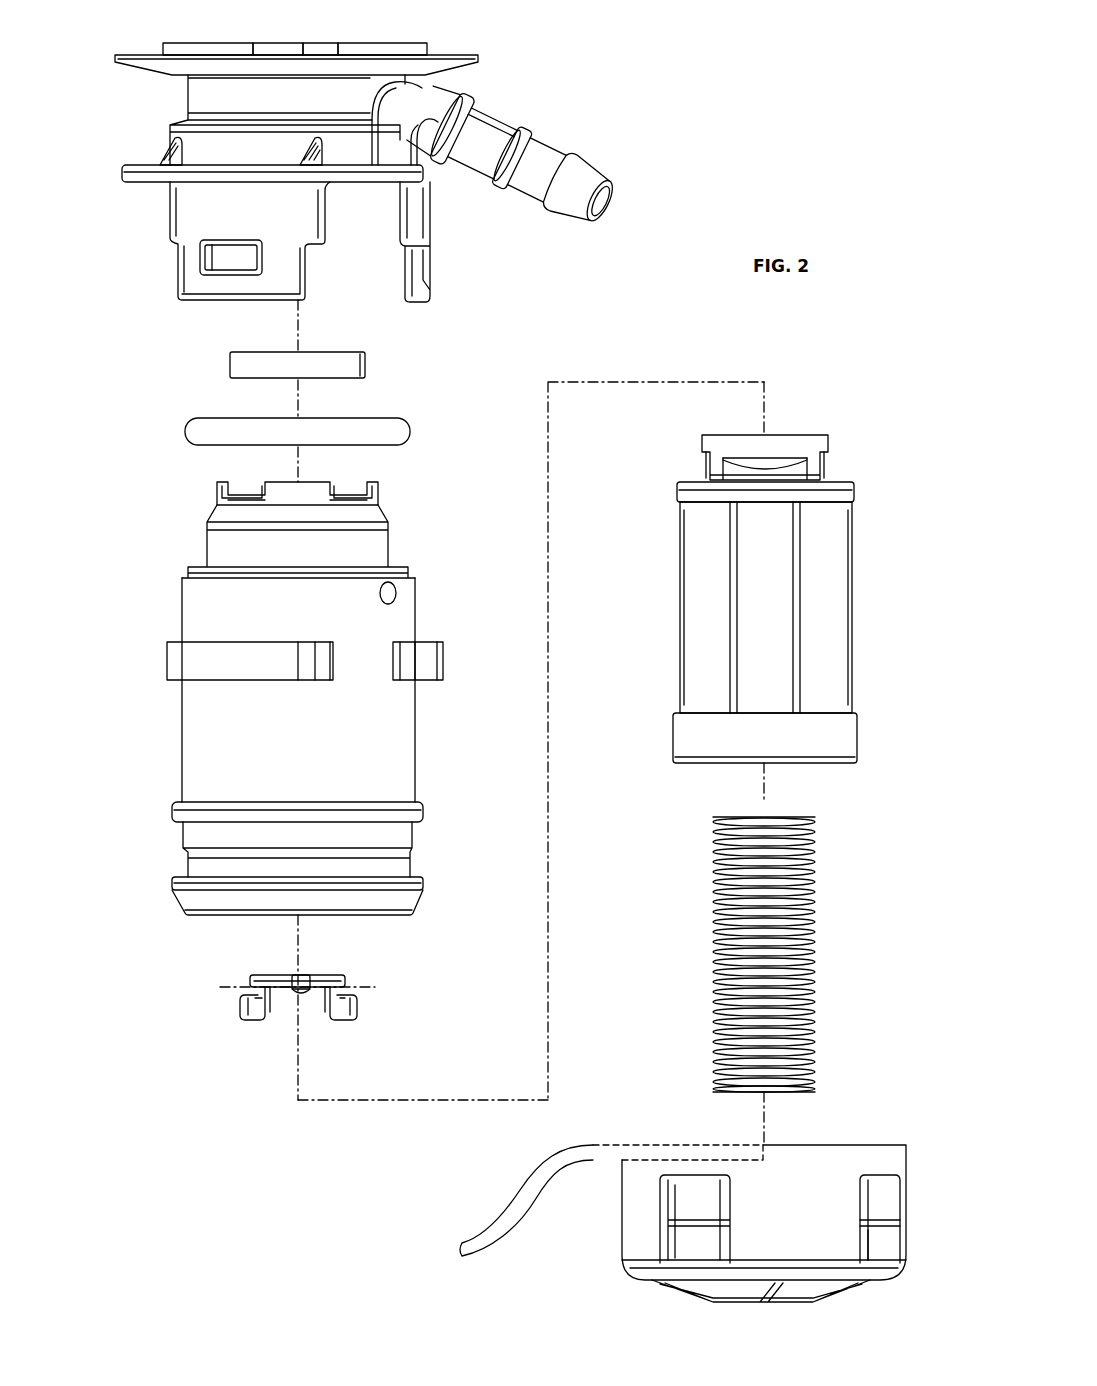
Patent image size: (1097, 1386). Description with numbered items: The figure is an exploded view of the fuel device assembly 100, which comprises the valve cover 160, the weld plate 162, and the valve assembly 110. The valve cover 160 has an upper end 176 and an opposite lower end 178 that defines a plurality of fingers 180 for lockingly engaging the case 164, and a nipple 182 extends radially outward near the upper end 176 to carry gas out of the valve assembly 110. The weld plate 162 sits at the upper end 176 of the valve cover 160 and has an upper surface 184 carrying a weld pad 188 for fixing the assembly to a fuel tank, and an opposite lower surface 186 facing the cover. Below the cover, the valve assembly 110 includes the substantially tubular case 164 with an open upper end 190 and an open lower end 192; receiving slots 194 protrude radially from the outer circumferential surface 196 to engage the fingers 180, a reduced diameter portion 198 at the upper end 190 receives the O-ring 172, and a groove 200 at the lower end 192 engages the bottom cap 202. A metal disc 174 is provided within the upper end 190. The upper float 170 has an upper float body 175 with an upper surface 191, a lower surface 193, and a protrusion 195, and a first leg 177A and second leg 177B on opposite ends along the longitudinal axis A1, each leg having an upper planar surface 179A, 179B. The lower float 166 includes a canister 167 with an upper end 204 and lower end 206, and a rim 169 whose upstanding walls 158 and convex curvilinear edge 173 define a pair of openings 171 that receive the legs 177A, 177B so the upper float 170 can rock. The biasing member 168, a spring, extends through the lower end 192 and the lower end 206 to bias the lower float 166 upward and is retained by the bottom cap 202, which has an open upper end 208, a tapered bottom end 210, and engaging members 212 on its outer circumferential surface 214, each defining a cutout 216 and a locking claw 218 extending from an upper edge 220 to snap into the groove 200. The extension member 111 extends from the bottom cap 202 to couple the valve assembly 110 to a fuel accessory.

The fuel device assembly 100 is at (690, 100).
The valve assembly 110 is at (128, 460).
The extension member 111 is at (488, 1240).
The upstanding walls 158 is at (710, 462).
The valve cover 160 is at (118, 173).
The weld plate 162 is at (150, 42).
The case 164 is at (135, 746).
The lower float 166 is at (885, 592).
The canister 167 is at (860, 670).
The biasing member 168 is at (855, 946).
The rim 169 is at (738, 420).
The upper float 170 is at (215, 1030).
The openings 171 is at (790, 472).
The O-ring 172 is at (206, 420).
The curvilinear edge 173 is at (745, 462).
The metal disc 174 is at (242, 360).
The upper float body 175 is at (275, 978).
The upper end 176 is at (185, 78).
The first leg 177A is at (358, 1008).
The second leg 177B is at (240, 1008).
The lower end 178 is at (420, 298).
The upper planar surface 179A is at (336, 1020).
The upper planar surface 179B is at (262, 1000).
The fingers 180 is at (190, 215).
The nipple 182 is at (546, 157).
The upper surface 184 is at (303, 55).
The lower surface 186 is at (228, 72).
The weld pad 188 is at (390, 42).
The upper end 190 is at (375, 485).
The upper surface 191 is at (308, 982).
The lower end 192 is at (382, 913).
The lower surface 193 is at (285, 998).
The receiving slots 194 is at (175, 662).
The protrusion 195 is at (300, 998).
The outer circumferential surface 196 is at (392, 745).
The reduced diameter portion 198 is at (195, 545).
The groove 200 is at (400, 862).
The bottom cap 202 is at (612, 1236).
The upper end 204 is at (838, 478).
The lower end 206 is at (832, 765).
The open upper end 208 is at (862, 1145).
The tapered bottom end 210 is at (805, 1290).
The engaging members 212 is at (890, 1195).
The outer circumferential surface 214 is at (638, 1170).
The cutout 216 is at (880, 1240).
The locking claw 218 is at (880, 1206).
The upper edge 220 is at (670, 1175).
The longitudinal axis A1 is at (228, 985).